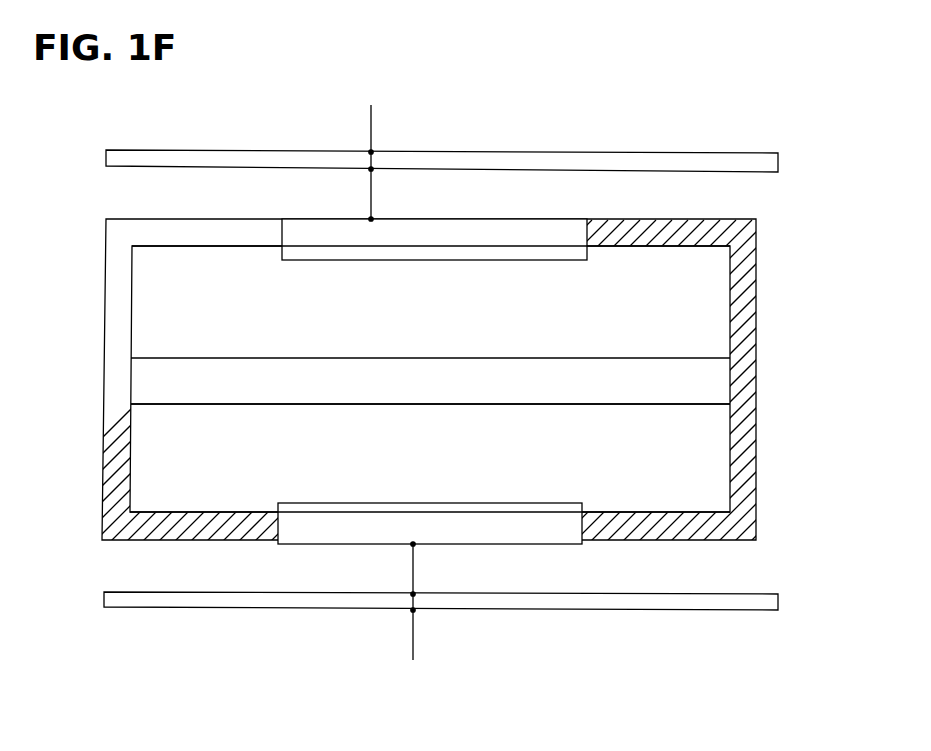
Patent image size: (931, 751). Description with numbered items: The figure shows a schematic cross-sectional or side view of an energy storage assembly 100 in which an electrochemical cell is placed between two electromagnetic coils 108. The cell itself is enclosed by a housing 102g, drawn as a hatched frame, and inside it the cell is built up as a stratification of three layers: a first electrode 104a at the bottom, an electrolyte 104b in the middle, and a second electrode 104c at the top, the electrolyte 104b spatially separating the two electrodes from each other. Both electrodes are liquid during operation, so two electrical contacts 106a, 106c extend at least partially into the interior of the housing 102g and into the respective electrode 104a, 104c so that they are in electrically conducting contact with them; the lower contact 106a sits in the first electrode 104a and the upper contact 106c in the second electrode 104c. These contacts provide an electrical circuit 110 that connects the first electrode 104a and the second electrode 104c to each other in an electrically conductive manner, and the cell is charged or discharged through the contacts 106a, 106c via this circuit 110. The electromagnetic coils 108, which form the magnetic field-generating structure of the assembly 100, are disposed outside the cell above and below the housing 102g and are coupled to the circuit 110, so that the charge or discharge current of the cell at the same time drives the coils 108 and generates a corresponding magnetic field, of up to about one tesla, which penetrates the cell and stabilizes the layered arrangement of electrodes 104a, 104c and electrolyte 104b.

The energy storage assembly 100 is at (661, 103).
The housing 102g is at (751, 219).
The first electrode 104a is at (430, 458).
The electrolyte 104b is at (430, 381).
The second electrode 104c is at (431, 282).
The electrical contact 106a is at (503, 527).
The electrical contact 106c is at (535, 231).
The electromagnetic coil 108 is at (157, 158).
The electrical circuit 110 is at (375, 129).